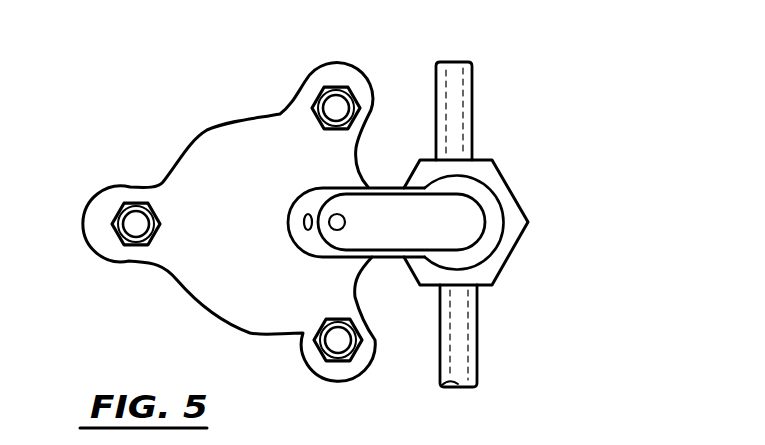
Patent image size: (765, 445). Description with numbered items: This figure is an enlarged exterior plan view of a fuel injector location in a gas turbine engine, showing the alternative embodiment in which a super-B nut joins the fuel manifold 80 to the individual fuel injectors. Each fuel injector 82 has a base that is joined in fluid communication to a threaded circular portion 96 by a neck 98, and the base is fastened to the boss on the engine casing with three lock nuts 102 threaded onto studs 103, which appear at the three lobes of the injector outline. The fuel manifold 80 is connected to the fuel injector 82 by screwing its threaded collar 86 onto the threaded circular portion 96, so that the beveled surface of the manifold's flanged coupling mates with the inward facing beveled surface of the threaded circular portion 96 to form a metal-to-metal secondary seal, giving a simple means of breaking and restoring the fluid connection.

The fuel manifold 80 is at (552, 194).
The fuel injector 82 is at (222, 86).
The threaded collar 86 is at (500, 176).
The threaded circular portion 96 is at (493, 242).
The neck 98 is at (386, 186).
The lock nuts 102 is at (340, 83).
The studs 103 is at (340, 108).